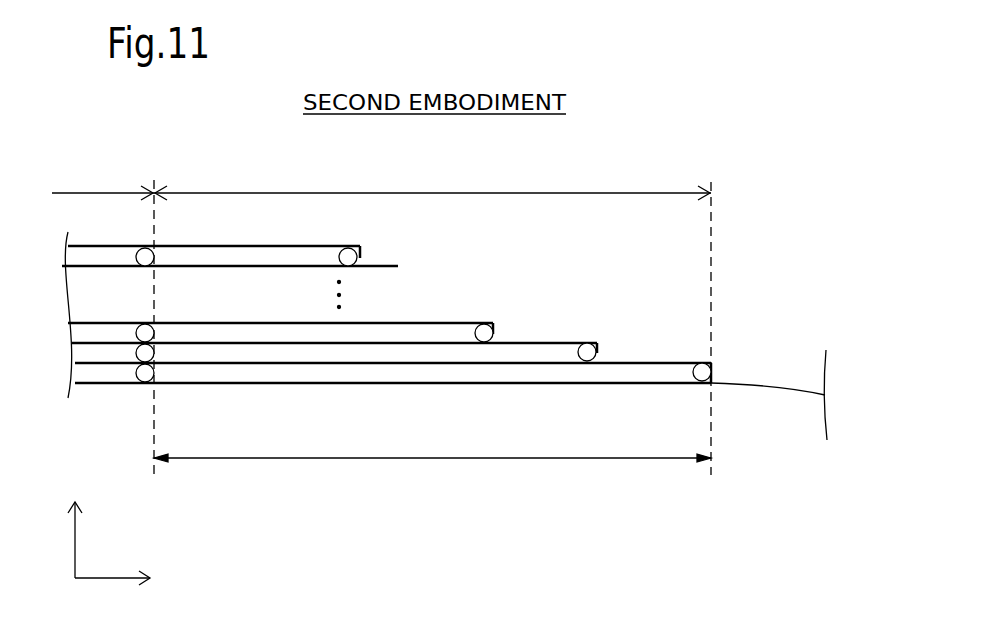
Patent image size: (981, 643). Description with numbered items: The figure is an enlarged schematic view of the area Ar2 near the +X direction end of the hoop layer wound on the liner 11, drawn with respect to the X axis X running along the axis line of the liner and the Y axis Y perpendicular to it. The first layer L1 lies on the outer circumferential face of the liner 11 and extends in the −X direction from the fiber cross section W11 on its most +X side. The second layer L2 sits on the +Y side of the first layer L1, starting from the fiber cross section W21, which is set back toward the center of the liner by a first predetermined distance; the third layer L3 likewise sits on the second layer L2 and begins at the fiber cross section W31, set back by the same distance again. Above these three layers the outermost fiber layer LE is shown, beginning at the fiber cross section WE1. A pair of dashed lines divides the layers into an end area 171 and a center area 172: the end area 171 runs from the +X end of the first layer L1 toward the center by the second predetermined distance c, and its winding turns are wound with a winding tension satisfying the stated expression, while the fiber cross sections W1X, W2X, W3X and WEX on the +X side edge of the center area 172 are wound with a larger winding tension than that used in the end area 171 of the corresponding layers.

The liner 11 is at (436, 414).
The end area 171 is at (432, 183).
The center area 172 is at (103, 184).
The area Ar2 is at (741, 187).
The second predetermined distance c is at (432, 449).
The outermost fiber layer LE is at (366, 255).
The first layer L1 is at (718, 373).
The second layer L2 is at (604, 352).
The third layer L3 is at (499, 333).
The fiber cross section WEX is at (141, 250).
The fiber cross section WE1 is at (380, 222).
The fiber cross section W3X is at (141, 330).
The fiber cross section W31 is at (486, 325).
The fiber cross section W2X is at (140, 352).
The fiber cross section W21 is at (589, 345).
The fiber cross section W1X is at (141, 373).
The fiber cross section W11 is at (705, 364).
The X axis X is at (121, 578).
The Y axis Y is at (74, 527).